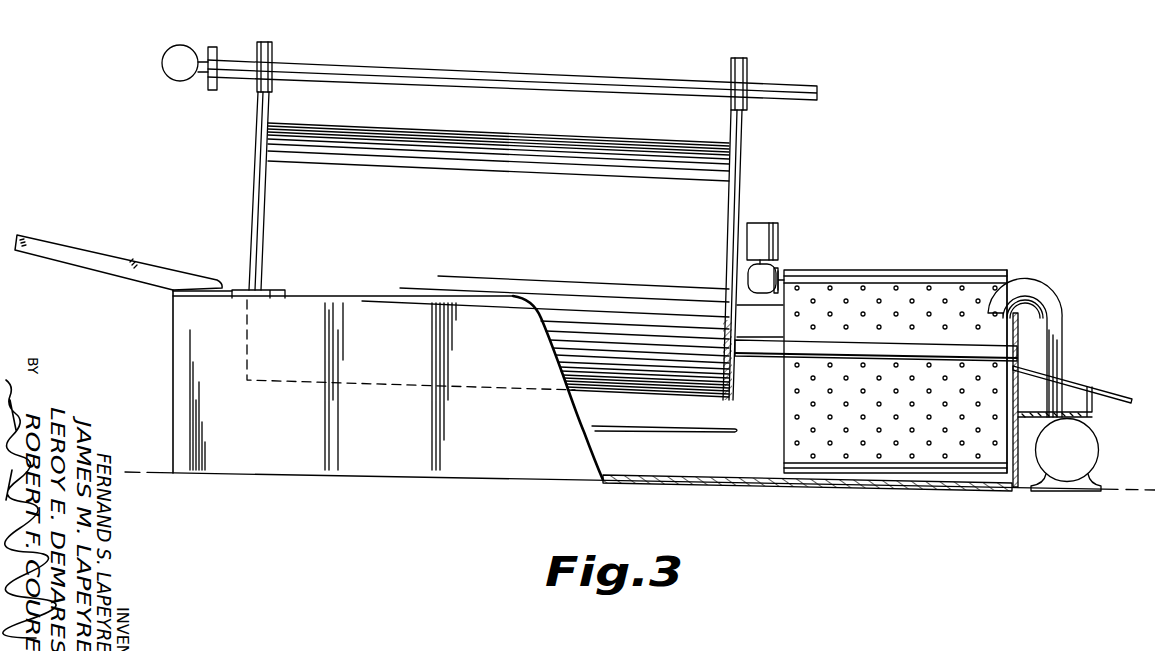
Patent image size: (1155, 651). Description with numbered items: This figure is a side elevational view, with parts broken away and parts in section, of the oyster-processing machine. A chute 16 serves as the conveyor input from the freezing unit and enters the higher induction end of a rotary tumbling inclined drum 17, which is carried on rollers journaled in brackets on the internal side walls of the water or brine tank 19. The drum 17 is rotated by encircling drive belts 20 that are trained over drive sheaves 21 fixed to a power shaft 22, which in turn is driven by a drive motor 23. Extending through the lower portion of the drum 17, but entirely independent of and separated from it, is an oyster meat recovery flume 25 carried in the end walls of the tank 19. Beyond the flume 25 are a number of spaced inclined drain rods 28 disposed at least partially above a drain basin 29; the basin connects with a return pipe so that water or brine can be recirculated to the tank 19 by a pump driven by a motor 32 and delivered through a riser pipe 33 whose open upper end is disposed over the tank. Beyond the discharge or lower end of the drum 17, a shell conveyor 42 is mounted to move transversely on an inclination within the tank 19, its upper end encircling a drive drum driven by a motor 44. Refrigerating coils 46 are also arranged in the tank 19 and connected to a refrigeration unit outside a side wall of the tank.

The chute 16 is at (73, 254).
The rotary tumbling inclined drum 17 is at (498, 158).
The water or brine tank 19 is at (736, 482).
The drive belts 20 is at (271, 107).
The drive sheaves 21 is at (270, 50).
The power shaft 22 is at (553, 76).
The drive motor 23 is at (190, 40).
The oyster meat recovery flume 25 is at (761, 357).
The drain rods 28 is at (1120, 396).
The drain basin 29 is at (1074, 394).
The motor 32 is at (1086, 456).
The riser pipe 33 is at (1057, 346).
The shell conveyor 42 is at (894, 272).
The motor 44 is at (775, 235).
The refrigerating coils 46 is at (681, 431).